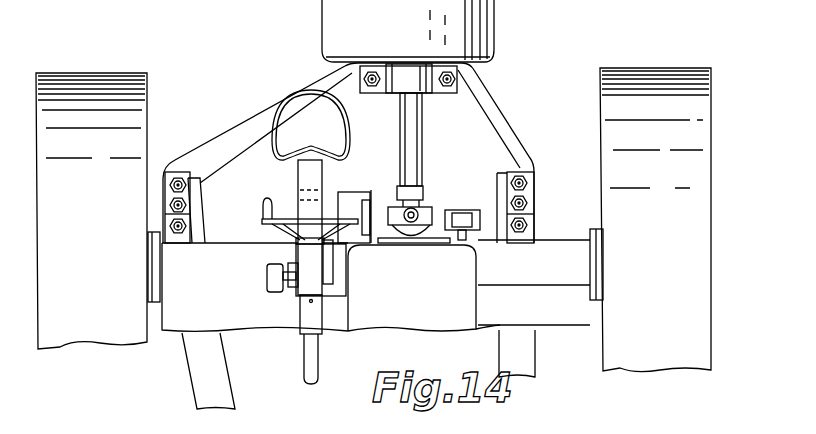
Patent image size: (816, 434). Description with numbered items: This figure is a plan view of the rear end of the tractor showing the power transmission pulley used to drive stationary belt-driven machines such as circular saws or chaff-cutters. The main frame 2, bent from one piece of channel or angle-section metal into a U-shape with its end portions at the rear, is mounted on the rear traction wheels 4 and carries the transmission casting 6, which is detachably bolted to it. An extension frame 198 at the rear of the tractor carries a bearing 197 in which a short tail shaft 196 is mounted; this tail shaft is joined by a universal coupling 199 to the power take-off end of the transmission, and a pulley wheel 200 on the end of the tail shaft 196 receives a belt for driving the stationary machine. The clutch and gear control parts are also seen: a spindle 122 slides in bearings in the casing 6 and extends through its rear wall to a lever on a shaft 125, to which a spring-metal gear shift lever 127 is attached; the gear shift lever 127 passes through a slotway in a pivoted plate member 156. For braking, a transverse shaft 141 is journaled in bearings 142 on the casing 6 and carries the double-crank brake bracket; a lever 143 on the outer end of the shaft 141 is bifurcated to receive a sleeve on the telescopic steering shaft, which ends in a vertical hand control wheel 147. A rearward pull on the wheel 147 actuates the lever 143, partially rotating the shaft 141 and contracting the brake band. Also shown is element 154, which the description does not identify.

The main frame 2 is at (218, 373).
The rear traction wheels 4 is at (373, 220).
The transmission casting 6 is at (376, 285).
The spindle 122 is at (470, 233).
The shaft 125 is at (480, 218).
The gear shift lever 127 is at (373, 192).
The transverse shaft 141 is at (266, 276).
The bearings 142 is at (273, 285).
The lever 143 is at (296, 290).
The hand control wheel 147 is at (260, 221).
The seat post 154 is at (352, 260).
The plate member 156 is at (352, 193).
The tail shaft 196 is at (415, 173).
The bearing 197 is at (428, 93).
The extension frame 198 is at (490, 125).
The universal coupling 199 is at (425, 200).
The pulley wheel 200 is at (497, 45).